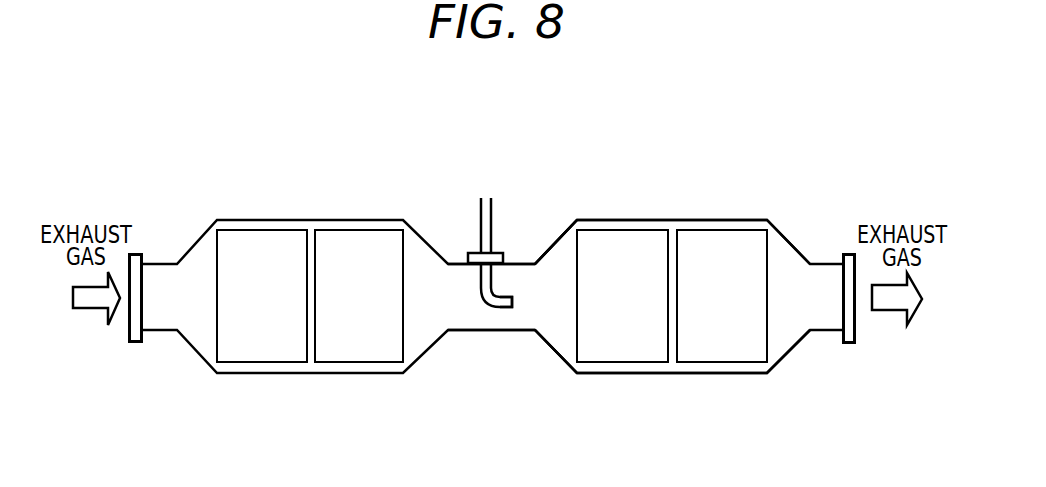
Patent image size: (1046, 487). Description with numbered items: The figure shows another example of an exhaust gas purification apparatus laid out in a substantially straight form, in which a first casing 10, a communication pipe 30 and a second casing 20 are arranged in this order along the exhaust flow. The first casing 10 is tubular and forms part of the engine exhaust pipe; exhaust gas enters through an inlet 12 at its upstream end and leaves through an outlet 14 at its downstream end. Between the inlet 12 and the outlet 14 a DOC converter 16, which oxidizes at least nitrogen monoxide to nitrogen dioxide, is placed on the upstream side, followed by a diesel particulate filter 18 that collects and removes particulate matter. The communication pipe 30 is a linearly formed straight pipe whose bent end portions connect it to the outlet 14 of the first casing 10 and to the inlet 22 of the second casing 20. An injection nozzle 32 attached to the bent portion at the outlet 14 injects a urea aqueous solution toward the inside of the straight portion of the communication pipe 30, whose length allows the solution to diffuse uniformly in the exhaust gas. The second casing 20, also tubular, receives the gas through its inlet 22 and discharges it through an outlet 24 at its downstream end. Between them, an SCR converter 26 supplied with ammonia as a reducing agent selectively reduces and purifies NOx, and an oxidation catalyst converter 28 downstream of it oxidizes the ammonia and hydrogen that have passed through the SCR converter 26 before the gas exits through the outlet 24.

The first casing 10 is at (305, 220).
The inlet 12 is at (133, 344).
The outlet 14 is at (449, 333).
The DOC converter 16 is at (258, 375).
The diesel particulate filter 18 is at (356, 375).
The second casing 20 is at (668, 220).
The inlet 22 is at (530, 333).
The outlet 24 is at (846, 345).
The SCR converter 26 is at (617, 375).
The oxidation catalyst converter 28 is at (716, 375).
The communication pipe 30 is at (514, 263).
The injection nozzle 32 is at (500, 310).